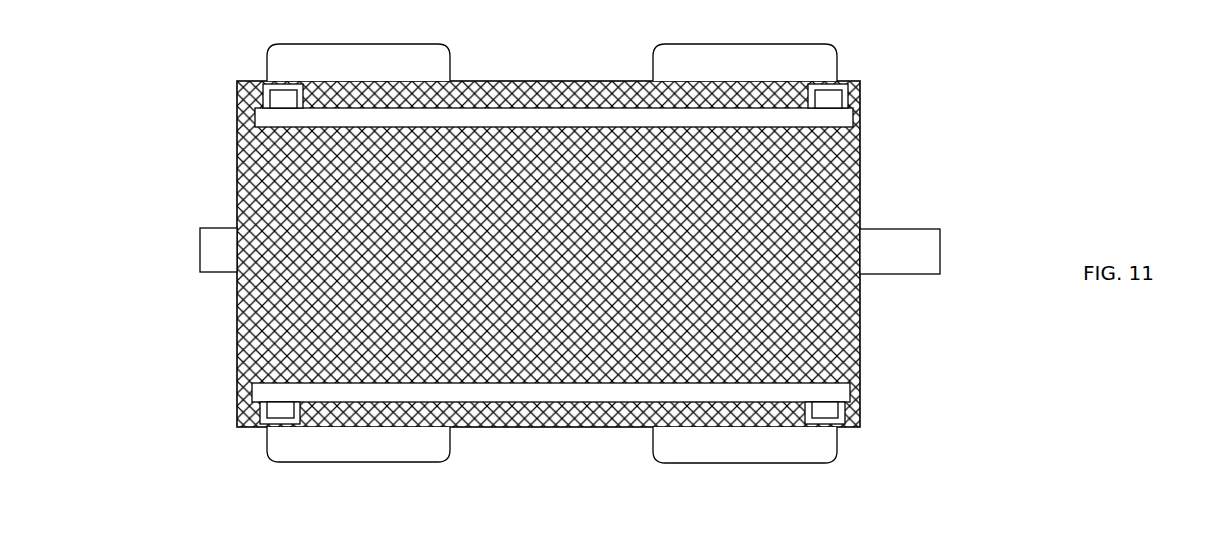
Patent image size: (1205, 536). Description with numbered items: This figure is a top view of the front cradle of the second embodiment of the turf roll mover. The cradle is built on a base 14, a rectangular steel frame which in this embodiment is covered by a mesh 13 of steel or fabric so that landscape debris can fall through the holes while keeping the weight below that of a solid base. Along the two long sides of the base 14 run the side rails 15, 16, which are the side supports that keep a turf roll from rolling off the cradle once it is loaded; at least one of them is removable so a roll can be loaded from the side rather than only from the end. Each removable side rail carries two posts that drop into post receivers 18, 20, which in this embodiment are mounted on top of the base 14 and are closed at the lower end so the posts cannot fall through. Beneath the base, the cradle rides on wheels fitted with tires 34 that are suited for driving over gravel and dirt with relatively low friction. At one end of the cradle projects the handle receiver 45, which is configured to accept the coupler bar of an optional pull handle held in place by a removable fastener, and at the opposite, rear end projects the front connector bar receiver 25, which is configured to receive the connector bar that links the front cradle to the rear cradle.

The mesh 13 is at (266, 180).
The base 14 is at (237, 320).
The side rail 15 is at (262, 392).
The side rail 16 is at (270, 120).
The post receiver 18 is at (272, 410).
The post receiver 20 is at (830, 412).
The front connector bar receiver 25 is at (924, 246).
The tire 34 is at (820, 449).
The handle receiver 45 is at (215, 252).